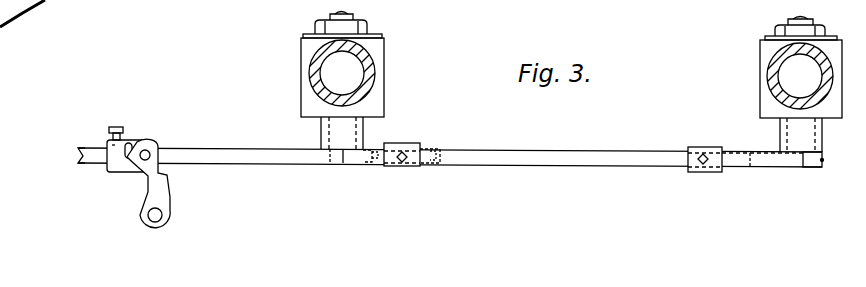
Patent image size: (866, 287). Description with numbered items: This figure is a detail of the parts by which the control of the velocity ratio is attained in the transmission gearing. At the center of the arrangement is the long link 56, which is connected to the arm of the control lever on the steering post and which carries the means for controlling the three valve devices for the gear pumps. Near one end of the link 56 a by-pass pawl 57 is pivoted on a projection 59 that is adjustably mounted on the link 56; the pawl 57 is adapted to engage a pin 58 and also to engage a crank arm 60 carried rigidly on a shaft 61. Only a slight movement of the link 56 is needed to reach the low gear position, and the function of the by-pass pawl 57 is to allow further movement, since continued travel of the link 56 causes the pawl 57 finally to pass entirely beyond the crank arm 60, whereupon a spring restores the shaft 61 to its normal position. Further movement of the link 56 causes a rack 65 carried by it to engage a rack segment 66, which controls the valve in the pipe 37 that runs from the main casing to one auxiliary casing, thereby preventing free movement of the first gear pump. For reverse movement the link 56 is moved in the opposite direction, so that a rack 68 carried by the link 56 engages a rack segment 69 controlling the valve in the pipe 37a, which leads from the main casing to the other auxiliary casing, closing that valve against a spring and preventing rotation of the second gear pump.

The pipe 37 is at (773, 60).
The pipe 37a is at (370, 67).
The link 56 is at (187, 150).
The by-pass pawl 57 is at (147, 146).
The pin 58 is at (128, 140).
The projection 59 is at (120, 168).
The crank arm 60 is at (168, 198).
The shaft 61 is at (159, 216).
The rack 65 is at (690, 148).
The rack segment 66 is at (775, 153).
The rack 68 is at (433, 148).
The rack segment 69 is at (371, 148).